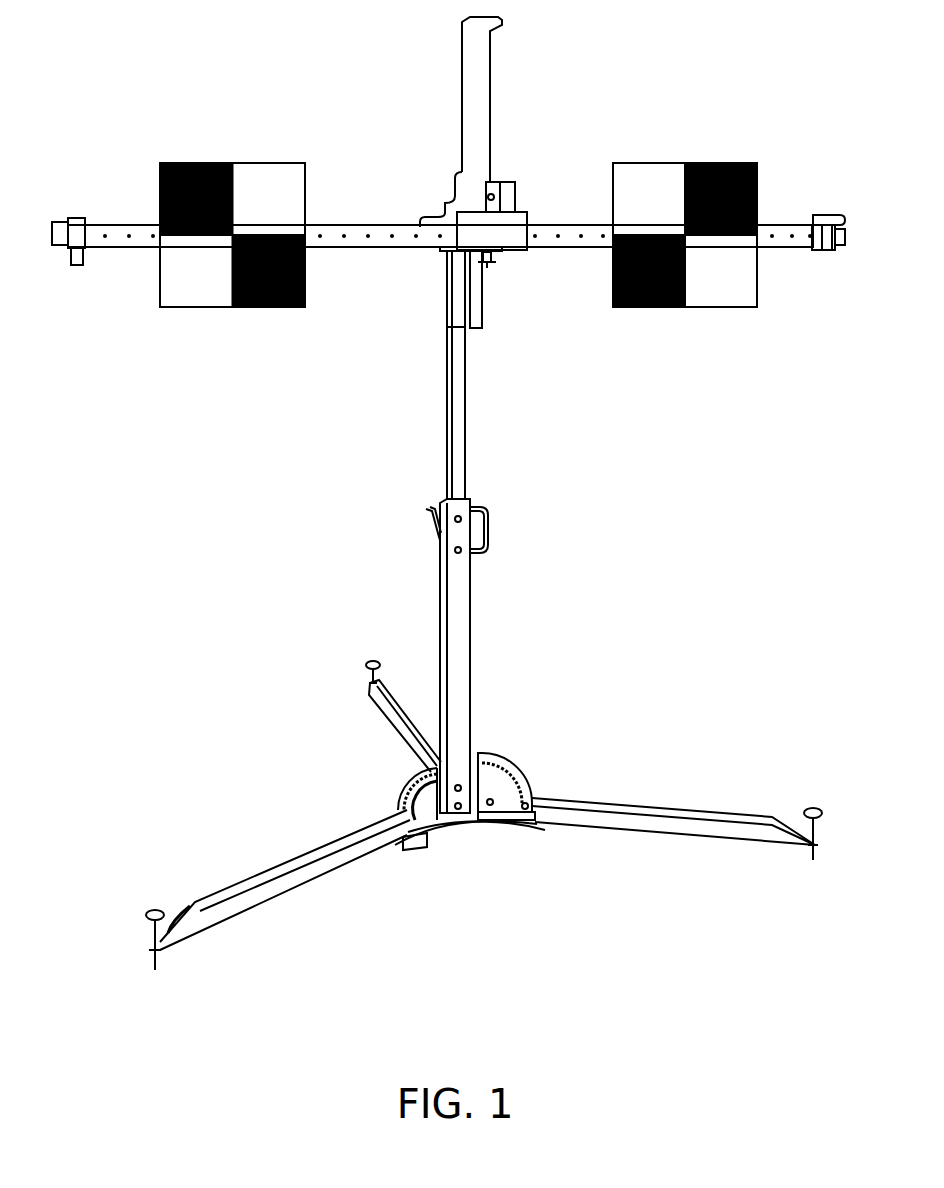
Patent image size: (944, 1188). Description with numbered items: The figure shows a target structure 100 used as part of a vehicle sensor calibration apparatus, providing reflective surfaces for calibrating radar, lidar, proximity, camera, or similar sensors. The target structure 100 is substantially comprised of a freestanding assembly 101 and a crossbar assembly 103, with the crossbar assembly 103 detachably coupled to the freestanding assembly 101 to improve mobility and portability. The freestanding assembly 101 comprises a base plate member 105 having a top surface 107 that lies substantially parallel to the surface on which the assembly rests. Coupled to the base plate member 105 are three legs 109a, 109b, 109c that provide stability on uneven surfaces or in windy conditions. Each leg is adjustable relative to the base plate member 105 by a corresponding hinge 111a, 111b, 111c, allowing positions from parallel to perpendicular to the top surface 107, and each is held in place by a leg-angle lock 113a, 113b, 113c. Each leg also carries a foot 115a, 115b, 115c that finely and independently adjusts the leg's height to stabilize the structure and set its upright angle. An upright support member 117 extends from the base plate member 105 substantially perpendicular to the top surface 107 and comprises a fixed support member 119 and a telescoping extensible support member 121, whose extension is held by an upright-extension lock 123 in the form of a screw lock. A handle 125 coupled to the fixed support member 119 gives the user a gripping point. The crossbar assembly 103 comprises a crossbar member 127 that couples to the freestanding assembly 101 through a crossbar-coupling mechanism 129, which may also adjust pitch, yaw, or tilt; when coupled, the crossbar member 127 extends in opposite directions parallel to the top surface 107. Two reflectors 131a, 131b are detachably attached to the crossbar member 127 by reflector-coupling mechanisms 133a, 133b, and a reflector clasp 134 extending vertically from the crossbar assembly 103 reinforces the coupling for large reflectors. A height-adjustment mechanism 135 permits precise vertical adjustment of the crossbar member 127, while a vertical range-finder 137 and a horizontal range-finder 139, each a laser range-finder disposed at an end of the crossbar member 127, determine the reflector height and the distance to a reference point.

The target structure 100 is at (360, 90).
The freestanding assembly 101 is at (647, 477).
The crossbar assembly 103 is at (361, 302).
The base plate member 105 is at (497, 820).
The top surface 107 is at (457, 814).
The leg 109a is at (765, 805).
The leg 109b is at (247, 875).
The leg 109c is at (385, 720).
The hinge 111a is at (525, 770).
The hinge 111b is at (405, 780).
The hinge 111c is at (423, 675).
The leg-angle lock 113a is at (510, 735).
The leg-angle lock 113b is at (410, 836).
The leg-angle lock 113c is at (480, 700).
The foot 115a is at (813, 806).
The foot 115b is at (152, 908).
The foot 115c is at (368, 667).
The upright support member 117 is at (300, 463).
The fixed support member 119 is at (441, 568).
The extensible support member 121 is at (460, 395).
The upright-extension lock 123 is at (426, 529).
The handle 125 is at (490, 535).
The crossbar member 127 is at (790, 252).
The crossbar-coupling mechanism 129 is at (535, 185).
The reflector 131a is at (668, 163).
The reflector 131b is at (190, 163).
The reflector-coupling mechanism 133a is at (597, 260).
The reflector-coupling mechanism 133b is at (135, 257).
The reflector clasp 134 is at (492, 70).
The height-adjustment mechanism 135 is at (447, 175).
The vertical range-finder 137 is at (70, 218).
The horizontal range-finder 139 is at (822, 215).